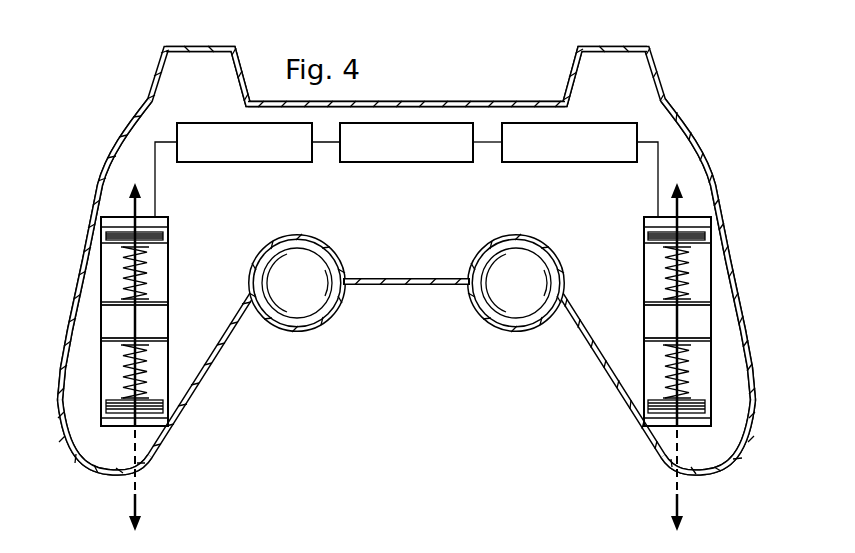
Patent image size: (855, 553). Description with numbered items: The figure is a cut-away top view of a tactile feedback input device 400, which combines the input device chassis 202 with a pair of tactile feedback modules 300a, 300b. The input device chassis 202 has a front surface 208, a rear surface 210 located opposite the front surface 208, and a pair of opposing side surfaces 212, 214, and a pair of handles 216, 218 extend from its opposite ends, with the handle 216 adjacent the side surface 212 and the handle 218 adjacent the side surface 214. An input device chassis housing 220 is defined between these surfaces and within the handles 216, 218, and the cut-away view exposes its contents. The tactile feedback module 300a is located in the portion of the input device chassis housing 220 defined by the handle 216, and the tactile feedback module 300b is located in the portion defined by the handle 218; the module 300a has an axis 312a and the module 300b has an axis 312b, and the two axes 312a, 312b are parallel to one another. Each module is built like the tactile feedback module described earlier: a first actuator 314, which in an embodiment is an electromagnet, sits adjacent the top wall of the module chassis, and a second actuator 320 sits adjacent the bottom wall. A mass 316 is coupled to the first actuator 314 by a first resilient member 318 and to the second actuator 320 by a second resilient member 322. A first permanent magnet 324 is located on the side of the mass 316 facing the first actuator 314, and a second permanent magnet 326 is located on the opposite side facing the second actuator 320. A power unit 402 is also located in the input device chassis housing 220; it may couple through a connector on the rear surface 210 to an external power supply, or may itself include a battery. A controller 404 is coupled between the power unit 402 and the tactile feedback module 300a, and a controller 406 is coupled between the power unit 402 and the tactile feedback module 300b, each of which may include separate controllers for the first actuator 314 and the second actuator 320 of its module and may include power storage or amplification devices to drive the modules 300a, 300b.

The tactile feedback input device 400 is at (114, 56).
The input device chassis 202 is at (692, 113).
The rear surface 210 is at (512, 100).
The side surface 212 is at (103, 153).
The side surface 214 is at (712, 163).
The handle 216 is at (100, 471).
The handle 218 is at (717, 471).
The front surface 208 is at (428, 285).
The input device chassis housing 220 is at (423, 253).
The controller 404 is at (243, 162).
The power unit 402 is at (405, 162).
The controller 406 is at (570, 162).
The tactile feedback module 300a is at (116, 208).
The tactile feedback module 300b is at (694, 208).
The axis 312a is at (137, 498).
The axis 312b is at (673, 498).
The first actuator 314 is at (113, 247).
The mass 316 is at (110, 318).
The first resilient member 318 is at (147, 265).
The second actuator 320 is at (110, 398).
The second resilient member 322 is at (145, 377).
The first permanent magnet 324 is at (160, 302).
The second permanent magnet 326 is at (110, 348).